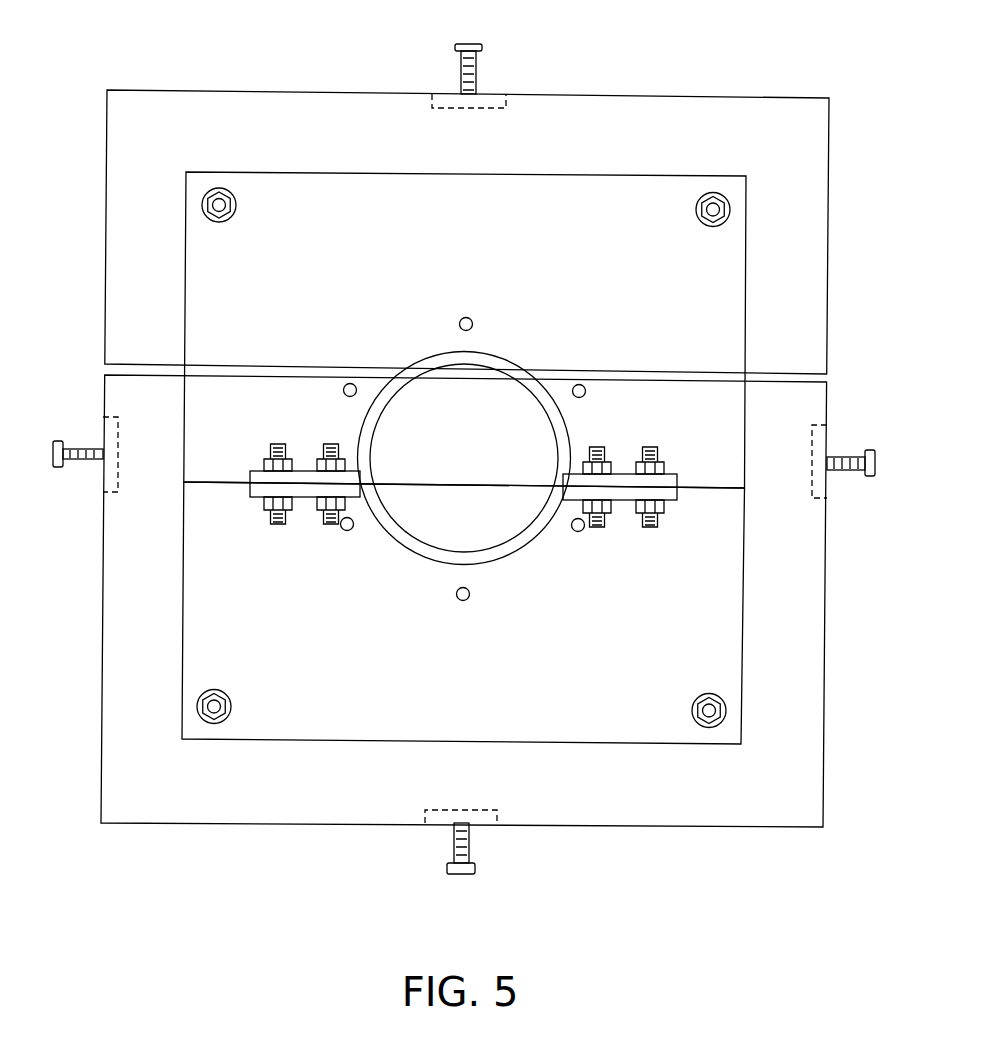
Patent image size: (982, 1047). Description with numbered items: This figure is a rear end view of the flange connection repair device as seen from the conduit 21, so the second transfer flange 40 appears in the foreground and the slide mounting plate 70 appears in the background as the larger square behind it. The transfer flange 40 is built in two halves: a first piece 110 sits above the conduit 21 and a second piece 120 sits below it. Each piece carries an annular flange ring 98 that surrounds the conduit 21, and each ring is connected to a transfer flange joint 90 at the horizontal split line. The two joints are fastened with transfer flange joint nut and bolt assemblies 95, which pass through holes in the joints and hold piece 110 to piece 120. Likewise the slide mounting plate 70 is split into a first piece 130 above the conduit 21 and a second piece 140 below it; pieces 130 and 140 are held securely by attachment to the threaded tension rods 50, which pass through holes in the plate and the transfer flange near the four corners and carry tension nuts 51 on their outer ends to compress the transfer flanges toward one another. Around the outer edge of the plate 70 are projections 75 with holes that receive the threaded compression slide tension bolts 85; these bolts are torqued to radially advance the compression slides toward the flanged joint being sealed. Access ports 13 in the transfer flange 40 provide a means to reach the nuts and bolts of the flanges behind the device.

The access ports 13 is at (466, 317).
The conduit 21 is at (492, 417).
The second transfer flange 40 is at (461, 458).
The tension rods 50 is at (219, 211).
The tension nuts 51 is at (236, 206).
The slide mounting plate 70 is at (436, 458).
The projections 75 is at (490, 100).
The compression slide tension bolts 85 is at (455, 47).
The transfer flange joint 90 is at (254, 472).
The transfer flange joint nut and bolt assembly 95 is at (269, 459).
The annular flange ring 98 is at (390, 387).
The first piece 110 is at (186, 320).
The second piece 120 is at (184, 600).
The first piece of slide mounting plate 130 is at (105, 280).
The second piece of slide mounting plate 140 is at (101, 690).